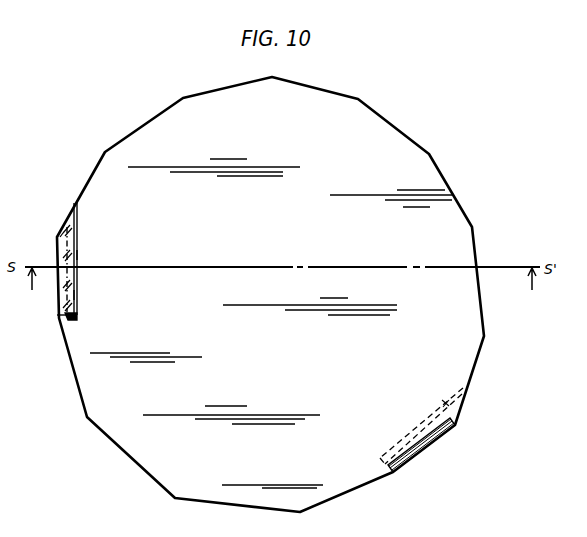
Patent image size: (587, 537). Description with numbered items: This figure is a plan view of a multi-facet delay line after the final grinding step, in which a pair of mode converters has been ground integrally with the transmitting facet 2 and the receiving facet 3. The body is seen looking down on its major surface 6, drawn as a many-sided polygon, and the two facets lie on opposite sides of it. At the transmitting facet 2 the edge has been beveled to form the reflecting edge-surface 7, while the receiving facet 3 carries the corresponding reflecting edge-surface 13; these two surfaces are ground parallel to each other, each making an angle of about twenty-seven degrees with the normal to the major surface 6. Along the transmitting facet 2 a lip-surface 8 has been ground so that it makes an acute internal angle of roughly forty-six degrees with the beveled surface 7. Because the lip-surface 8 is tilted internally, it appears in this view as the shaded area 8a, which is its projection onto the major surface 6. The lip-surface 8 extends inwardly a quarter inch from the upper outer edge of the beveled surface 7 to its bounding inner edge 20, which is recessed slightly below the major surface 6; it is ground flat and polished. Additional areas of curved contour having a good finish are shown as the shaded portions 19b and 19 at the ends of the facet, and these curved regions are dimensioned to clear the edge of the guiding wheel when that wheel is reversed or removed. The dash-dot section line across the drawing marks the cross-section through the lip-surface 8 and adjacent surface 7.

The transmitting facet 2 is at (78, 316).
The receiving facet 3 is at (446, 406).
The major surface 6 is at (103, 173).
The reflecting edge-surface 7 is at (64, 250).
The lip-surface 8 is at (65, 236).
The projection of lip-surface on major surface 8a is at (62, 235).
The reflecting edge-surface 13 is at (424, 450).
The curved contour area 19 is at (68, 318).
The curved contour area 19b is at (78, 295).
The bounding inner edge of lip-surface 20 is at (77, 255).